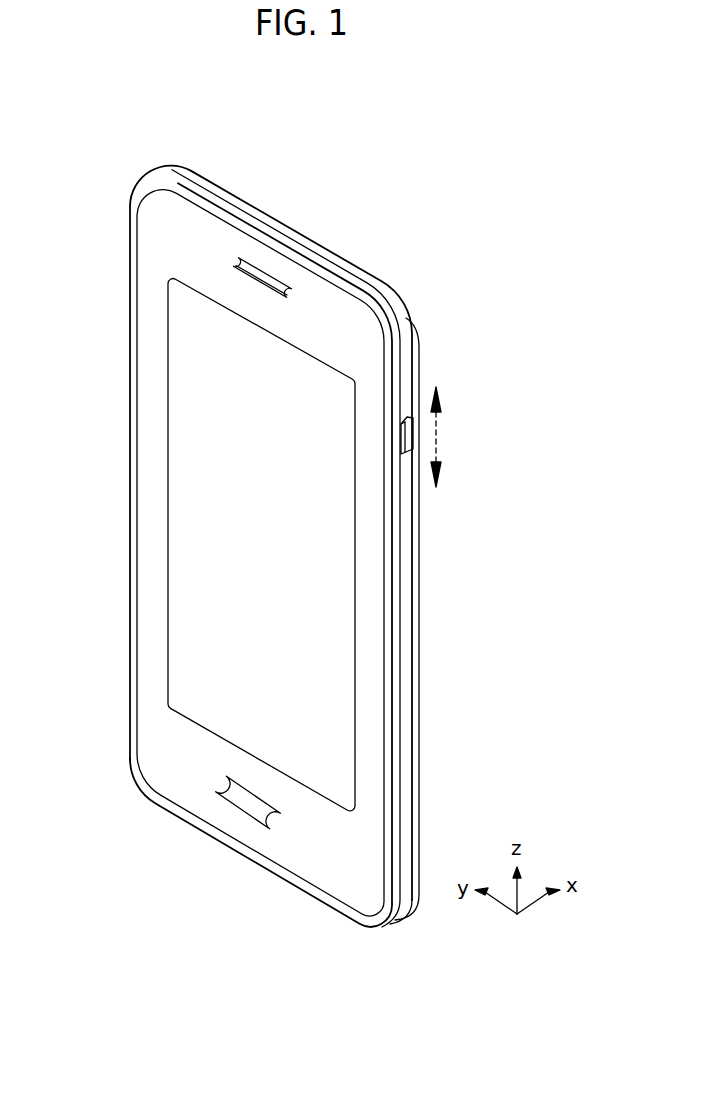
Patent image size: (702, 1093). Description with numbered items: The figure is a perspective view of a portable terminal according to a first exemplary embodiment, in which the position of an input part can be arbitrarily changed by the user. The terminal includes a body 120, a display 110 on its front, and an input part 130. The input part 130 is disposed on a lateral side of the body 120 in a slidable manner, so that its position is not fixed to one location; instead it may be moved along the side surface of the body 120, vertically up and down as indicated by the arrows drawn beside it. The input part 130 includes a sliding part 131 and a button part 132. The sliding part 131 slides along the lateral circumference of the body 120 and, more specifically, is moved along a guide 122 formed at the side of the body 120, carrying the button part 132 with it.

The display 110 is at (205, 463).
The body 120 is at (152, 407).
The guide 122 is at (413, 323).
The input part 130 is at (484, 619).
The sliding part 131 is at (408, 370).
The button part 132 is at (456, 439).